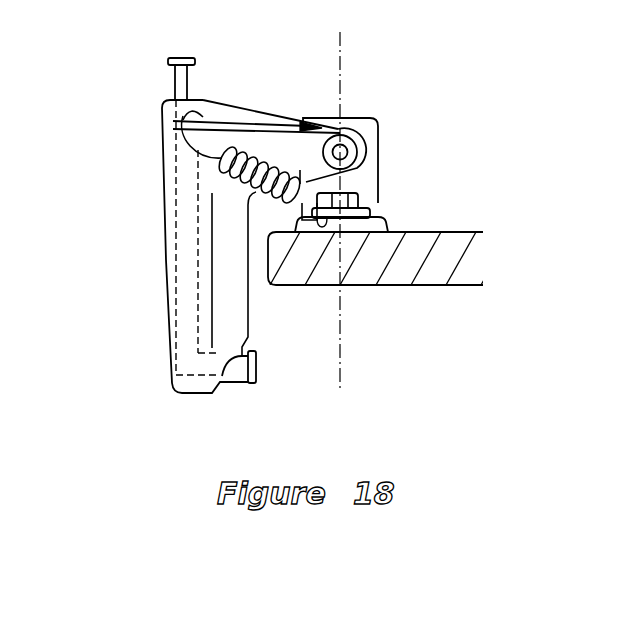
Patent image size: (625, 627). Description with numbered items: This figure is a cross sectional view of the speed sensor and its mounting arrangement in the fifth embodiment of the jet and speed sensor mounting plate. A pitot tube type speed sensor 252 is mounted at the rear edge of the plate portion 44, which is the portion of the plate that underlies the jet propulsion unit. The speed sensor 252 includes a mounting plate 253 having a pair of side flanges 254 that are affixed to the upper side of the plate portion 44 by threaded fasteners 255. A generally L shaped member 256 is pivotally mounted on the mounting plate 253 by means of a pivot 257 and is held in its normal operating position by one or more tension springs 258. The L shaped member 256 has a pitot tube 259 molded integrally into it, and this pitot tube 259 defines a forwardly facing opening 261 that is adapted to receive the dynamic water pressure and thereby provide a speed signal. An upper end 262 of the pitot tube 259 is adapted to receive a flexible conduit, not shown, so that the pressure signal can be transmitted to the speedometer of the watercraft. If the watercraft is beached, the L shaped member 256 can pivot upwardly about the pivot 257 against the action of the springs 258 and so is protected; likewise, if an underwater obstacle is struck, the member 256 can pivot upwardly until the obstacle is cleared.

The plate portion 44 is at (452, 232).
The pitot tube type speed sensor 252 is at (160, 258).
The mounting plate 253 is at (380, 135).
The side flanges 254 is at (381, 223).
The threaded fasteners 255 is at (359, 198).
The L shaped member 256 is at (162, 145).
The pivot 257 is at (343, 136).
The tension springs 258 is at (250, 150).
The pitot tube 259 is at (239, 372).
The forwardly facing opening 261 is at (257, 366).
The upper end 262 is at (172, 82).